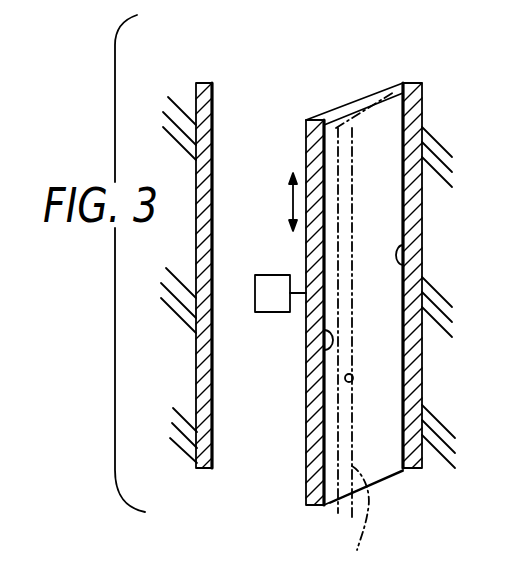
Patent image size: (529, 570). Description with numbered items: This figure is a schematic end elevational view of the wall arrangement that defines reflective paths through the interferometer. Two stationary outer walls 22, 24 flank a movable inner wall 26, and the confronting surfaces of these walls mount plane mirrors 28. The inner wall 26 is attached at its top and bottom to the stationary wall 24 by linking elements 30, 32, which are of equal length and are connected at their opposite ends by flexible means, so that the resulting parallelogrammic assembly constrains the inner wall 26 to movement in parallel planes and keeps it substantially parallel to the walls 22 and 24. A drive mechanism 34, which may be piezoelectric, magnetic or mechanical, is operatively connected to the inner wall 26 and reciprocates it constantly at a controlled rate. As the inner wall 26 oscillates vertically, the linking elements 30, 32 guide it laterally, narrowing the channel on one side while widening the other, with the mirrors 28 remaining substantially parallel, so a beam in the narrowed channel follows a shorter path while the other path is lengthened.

The stationary outer wall 22 is at (203, 470).
The stationary outer wall 24 is at (424, 470).
The movable inner wall 26 is at (338, 127).
The plane mirrors 28 is at (212, 103).
The linking element 30 is at (324, 275).
The linking element 32 is at (397, 476).
The drive mechanism 34 is at (264, 283).